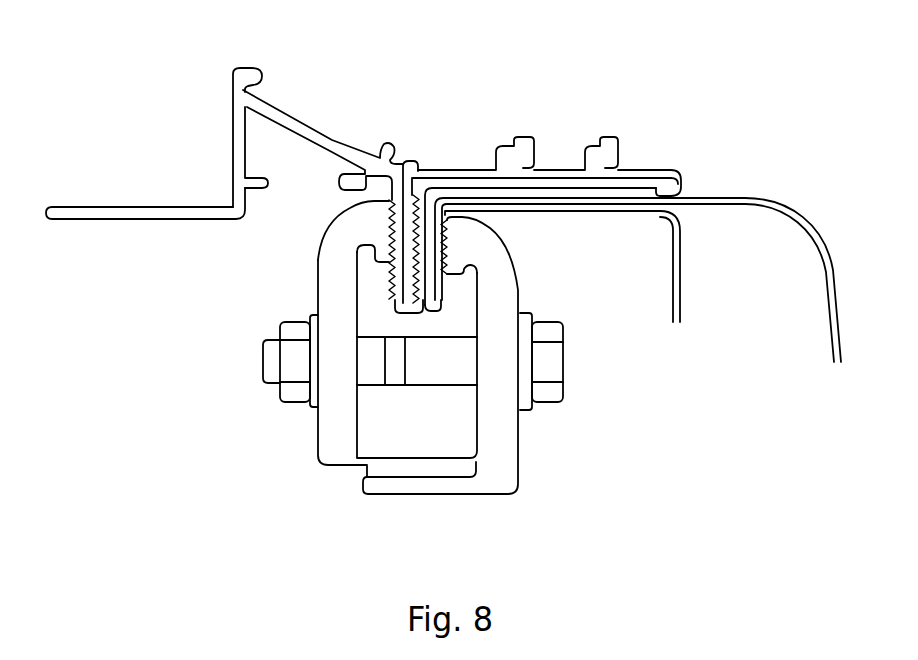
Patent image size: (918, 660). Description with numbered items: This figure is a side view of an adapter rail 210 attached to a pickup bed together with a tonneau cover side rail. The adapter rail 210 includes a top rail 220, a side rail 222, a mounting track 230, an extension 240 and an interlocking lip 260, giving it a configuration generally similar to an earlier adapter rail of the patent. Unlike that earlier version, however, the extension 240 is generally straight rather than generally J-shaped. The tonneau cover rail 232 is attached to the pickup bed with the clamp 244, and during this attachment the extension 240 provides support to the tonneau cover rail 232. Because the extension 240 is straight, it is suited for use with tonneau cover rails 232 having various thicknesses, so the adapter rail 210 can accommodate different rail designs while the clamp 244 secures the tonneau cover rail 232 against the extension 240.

The adapter rail 210 is at (434, 130).
The top rail 220 is at (658, 185).
The side rail 222 is at (417, 298).
The mounting track 230 is at (590, 142).
The tonneau cover rail 232 is at (158, 251).
The extension 240 is at (397, 310).
The clamp 244 is at (337, 460).
The interlocking lip 260 is at (418, 164).